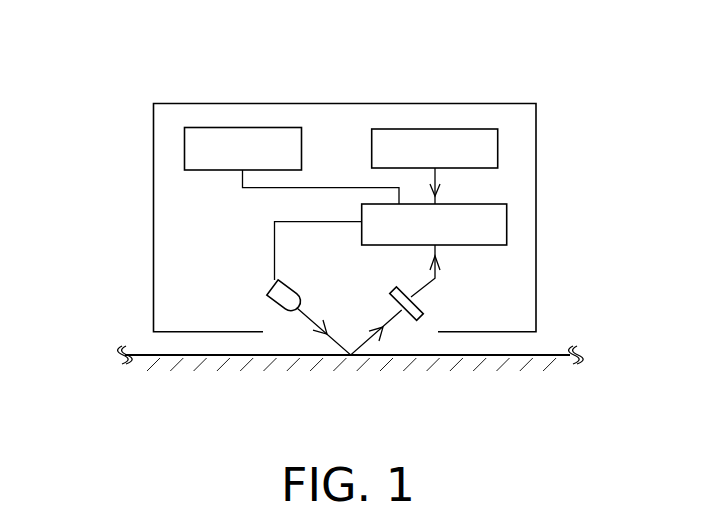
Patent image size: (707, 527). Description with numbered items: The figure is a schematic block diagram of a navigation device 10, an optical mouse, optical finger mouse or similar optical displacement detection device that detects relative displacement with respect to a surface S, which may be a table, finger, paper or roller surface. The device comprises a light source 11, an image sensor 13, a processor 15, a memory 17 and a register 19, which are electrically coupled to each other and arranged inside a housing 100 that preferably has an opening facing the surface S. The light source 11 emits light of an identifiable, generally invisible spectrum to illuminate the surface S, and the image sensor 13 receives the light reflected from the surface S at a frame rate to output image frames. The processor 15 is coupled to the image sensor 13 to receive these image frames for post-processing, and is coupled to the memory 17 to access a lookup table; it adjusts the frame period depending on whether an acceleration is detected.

The navigation device 10 is at (107, 43).
The housing 100 is at (536, 170).
The register 19 is at (221, 127).
The memory 17 is at (427, 130).
The processor 15 is at (507, 222).
The light source 11 is at (287, 312).
The image sensor 13 is at (420, 322).
The surface S is at (525, 355).